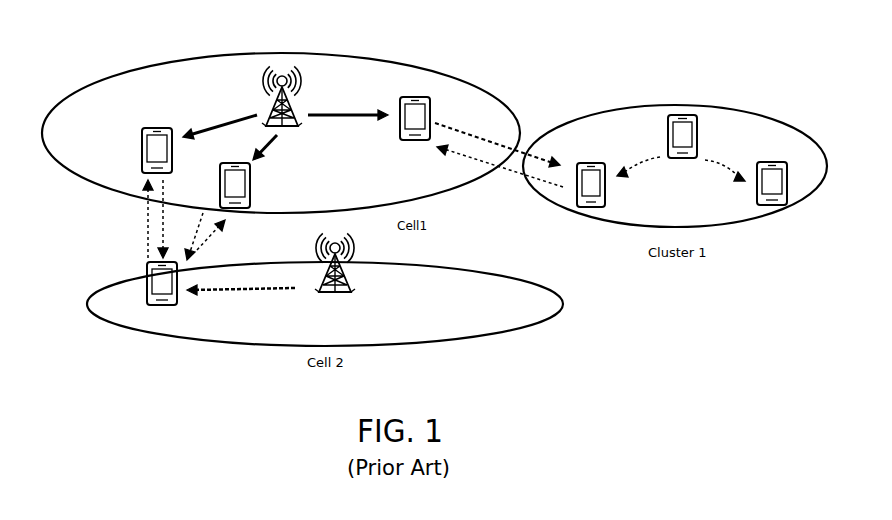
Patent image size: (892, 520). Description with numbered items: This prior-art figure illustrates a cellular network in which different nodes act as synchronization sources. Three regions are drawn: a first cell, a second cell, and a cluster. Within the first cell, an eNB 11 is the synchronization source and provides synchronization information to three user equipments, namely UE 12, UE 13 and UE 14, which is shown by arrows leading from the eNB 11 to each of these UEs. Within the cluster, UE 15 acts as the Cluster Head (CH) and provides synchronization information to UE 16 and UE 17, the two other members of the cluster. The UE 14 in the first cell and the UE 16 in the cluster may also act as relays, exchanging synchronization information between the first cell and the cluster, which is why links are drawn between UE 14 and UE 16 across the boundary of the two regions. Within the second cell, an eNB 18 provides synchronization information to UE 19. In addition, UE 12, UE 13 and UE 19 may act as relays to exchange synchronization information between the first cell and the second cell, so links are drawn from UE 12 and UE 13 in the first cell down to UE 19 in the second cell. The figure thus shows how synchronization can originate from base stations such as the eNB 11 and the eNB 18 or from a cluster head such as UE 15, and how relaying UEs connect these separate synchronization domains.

The eNB 11 is at (281, 64).
The UE 12 is at (158, 130).
The UE 13 is at (250, 190).
The UE 14 is at (400, 130).
The UE acting as Cluster Head 15 is at (682, 117).
The UE 16 is at (590, 163).
The UE 17 is at (768, 162).
The eNB 18 is at (353, 290).
The UE 19 is at (177, 303).